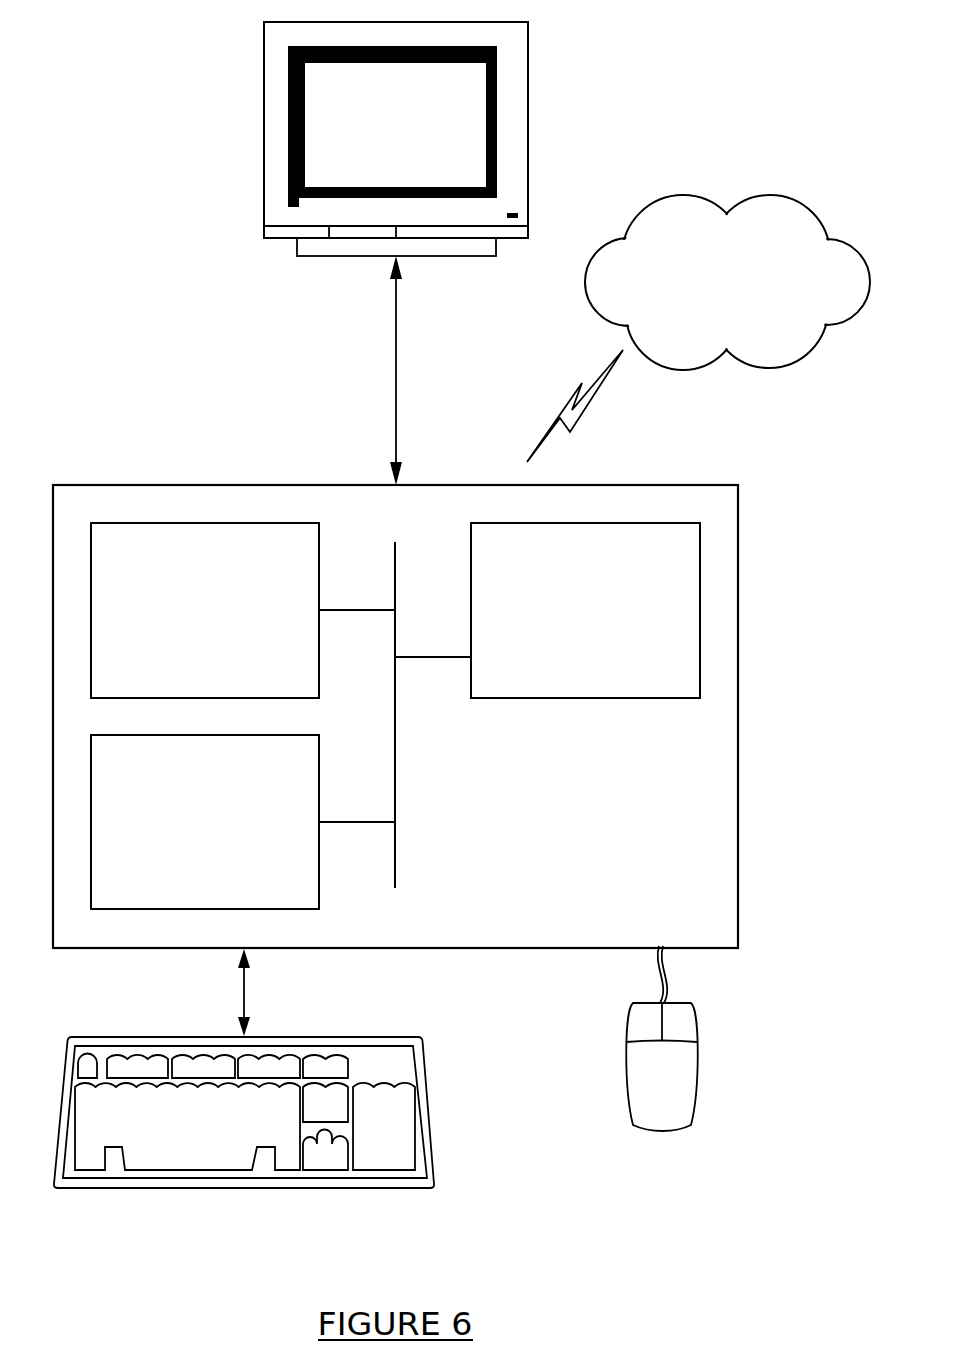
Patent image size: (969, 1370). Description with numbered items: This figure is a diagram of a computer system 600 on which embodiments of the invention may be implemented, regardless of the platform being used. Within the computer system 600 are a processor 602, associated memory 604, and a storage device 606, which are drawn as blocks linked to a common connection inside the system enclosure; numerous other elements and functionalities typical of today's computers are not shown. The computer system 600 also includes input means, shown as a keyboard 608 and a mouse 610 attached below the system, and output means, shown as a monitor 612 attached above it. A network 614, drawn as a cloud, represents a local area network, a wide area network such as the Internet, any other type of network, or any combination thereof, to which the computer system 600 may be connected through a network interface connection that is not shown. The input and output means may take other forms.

The computer system 600 is at (763, 556).
The processor 602 is at (564, 623).
The memory 604 is at (182, 623).
The storage device 606 is at (182, 835).
The keyboard 608 is at (166, 1143).
The mouse 610 is at (640, 1091).
The monitor 612 is at (374, 140).
The network 614 is at (706, 295).